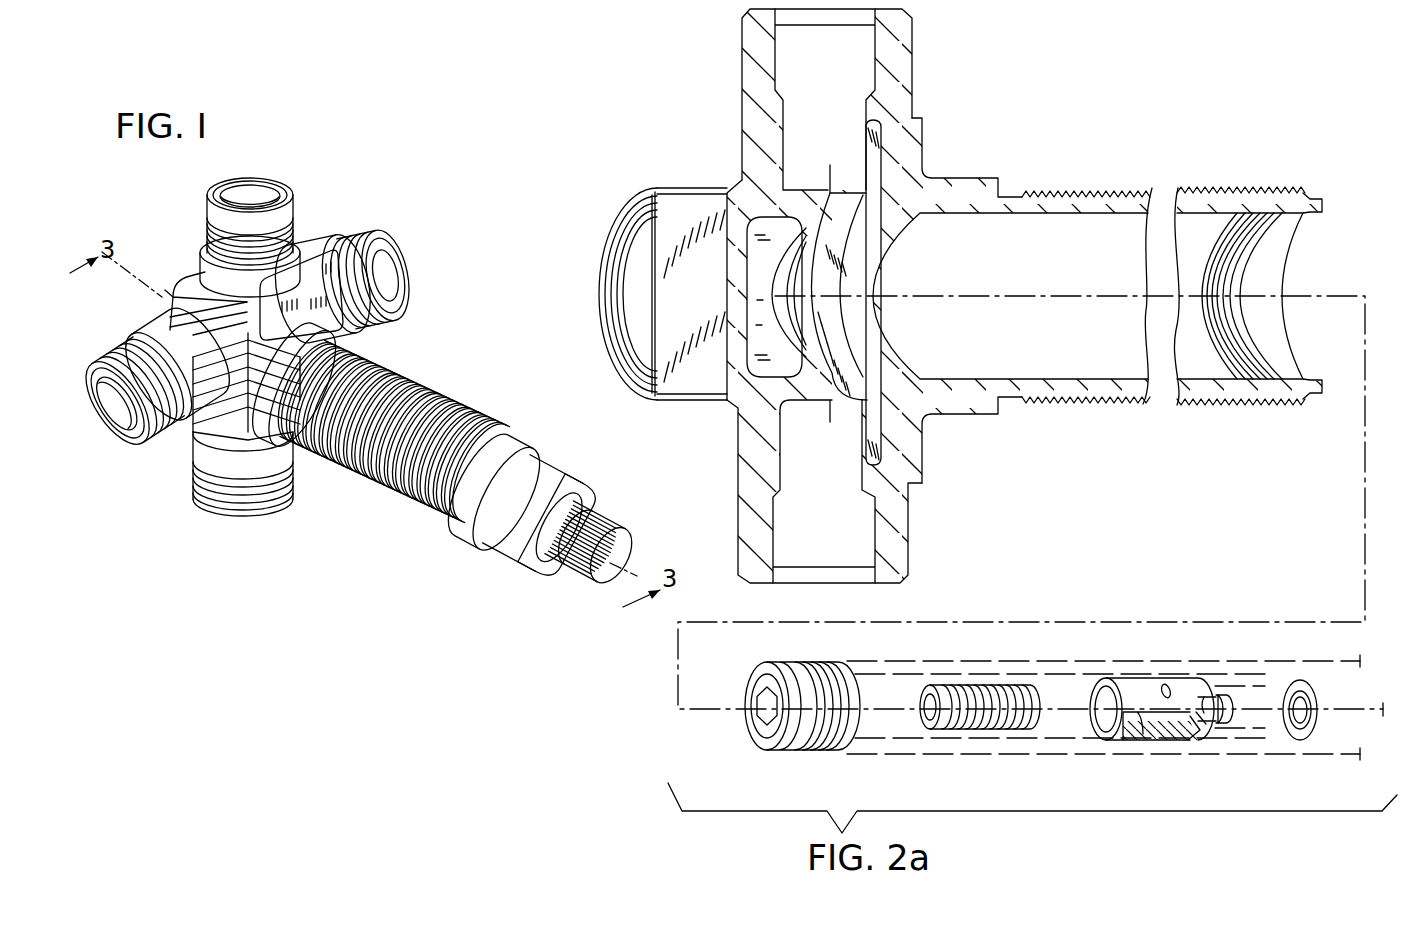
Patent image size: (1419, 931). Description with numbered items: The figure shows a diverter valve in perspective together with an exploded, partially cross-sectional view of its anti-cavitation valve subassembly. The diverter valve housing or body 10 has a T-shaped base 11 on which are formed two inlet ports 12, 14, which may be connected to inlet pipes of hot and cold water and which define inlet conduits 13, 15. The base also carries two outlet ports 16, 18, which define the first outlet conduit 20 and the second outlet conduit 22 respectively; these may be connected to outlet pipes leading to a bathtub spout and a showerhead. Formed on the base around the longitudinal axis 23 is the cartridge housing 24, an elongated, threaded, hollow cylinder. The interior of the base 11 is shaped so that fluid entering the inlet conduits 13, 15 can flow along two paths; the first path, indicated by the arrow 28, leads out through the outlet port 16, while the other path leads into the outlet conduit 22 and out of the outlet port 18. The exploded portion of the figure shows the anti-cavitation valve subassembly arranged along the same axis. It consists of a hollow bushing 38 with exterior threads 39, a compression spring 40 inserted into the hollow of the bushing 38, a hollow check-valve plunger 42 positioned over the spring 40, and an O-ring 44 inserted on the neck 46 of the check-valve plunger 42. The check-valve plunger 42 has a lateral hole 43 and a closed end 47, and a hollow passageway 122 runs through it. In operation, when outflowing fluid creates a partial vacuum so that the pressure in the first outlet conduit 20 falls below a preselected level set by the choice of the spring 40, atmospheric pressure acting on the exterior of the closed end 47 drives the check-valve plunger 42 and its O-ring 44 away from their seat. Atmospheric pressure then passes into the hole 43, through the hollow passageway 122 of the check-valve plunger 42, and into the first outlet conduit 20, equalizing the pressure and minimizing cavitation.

In FIG. 1, the diverter valve housing or body 10 is at (395, 526).
In FIG. 2A, the diverter valve housing or body 10 is at (1097, 412).
In FIG. 1, the T-shaped base 11 is at (275, 510).
In FIG. 2A, the T-shaped base 11 is at (718, 174).
In FIG. 1, the inlet port 12 is at (138, 457).
In FIG. 2A, the inlet port 12 is at (905, 521).
In FIG. 1, the inlet conduit 13 is at (125, 418).
In FIG. 2A, the inlet conduit 13 is at (826, 540).
In FIG. 1, the inlet port 14 is at (380, 246).
In FIG. 2A, the inlet port 14 is at (750, 64).
In FIG. 1, the inlet conduit 15 is at (396, 256).
In FIG. 2A, the inlet conduit 15 is at (832, 140).
In FIG. 1, the outlet port 16 is at (236, 496).
In FIG. 2A, the outlet port 16 is at (614, 246).
In FIG. 1, the outlet port 18 is at (215, 216).
In FIG. 1, the first outlet conduit 20 is at (222, 512).
In FIG. 1, the second outlet conduit 22 is at (253, 190).
In FIG. 1, the longitudinal axis 23 is at (165, 283).
In FIG. 2A, the longitudinal axis 23 is at (1366, 297).
In FIG. 1, the cartridge housing 24 is at (448, 382).
In FIG. 2A, the cartridge housing 24 is at (1105, 196).
In FIG. 1, the arrow 28 is at (620, 560).
In FIG. 2A, the hollow bushing 38 is at (778, 752).
In FIG. 2A, the exterior threads 39 is at (818, 752).
In FIG. 2A, the compression spring 40 is at (998, 735).
In FIG. 2A, the check-valve plunger 42 is at (1165, 740).
In FIG. 2A, the lateral hole 43 is at (1165, 688).
In FIG. 2A, the O-ring 44 is at (1292, 732).
In FIG. 2A, the neck 46 is at (1207, 695).
In FIG. 2A, the closed end 47 is at (1222, 696).
In FIG. 2A, the hollow passageway 122 is at (1116, 710).